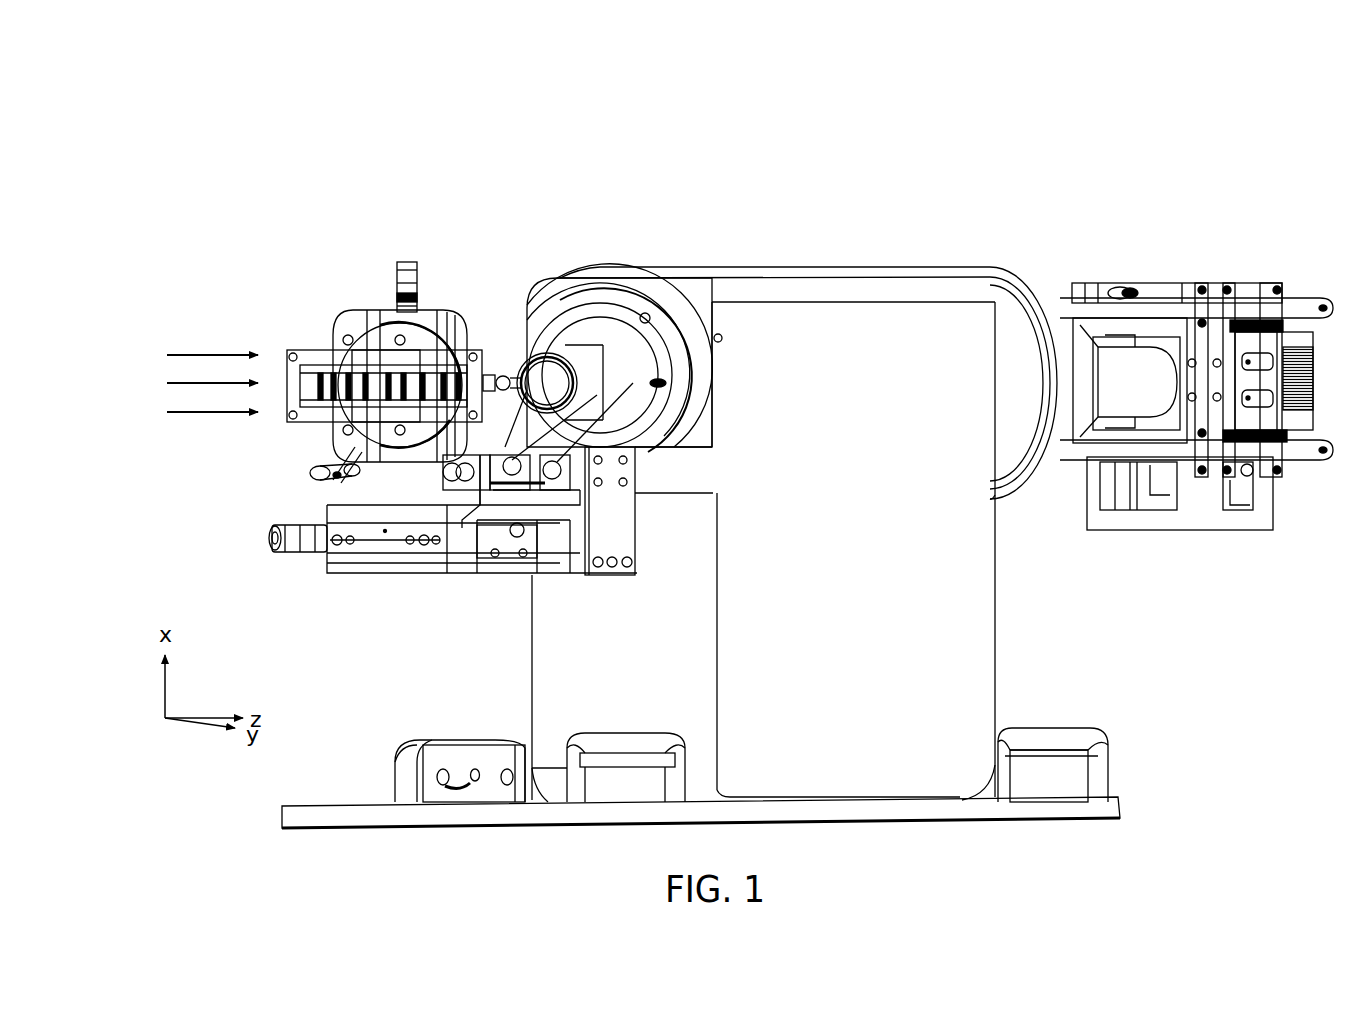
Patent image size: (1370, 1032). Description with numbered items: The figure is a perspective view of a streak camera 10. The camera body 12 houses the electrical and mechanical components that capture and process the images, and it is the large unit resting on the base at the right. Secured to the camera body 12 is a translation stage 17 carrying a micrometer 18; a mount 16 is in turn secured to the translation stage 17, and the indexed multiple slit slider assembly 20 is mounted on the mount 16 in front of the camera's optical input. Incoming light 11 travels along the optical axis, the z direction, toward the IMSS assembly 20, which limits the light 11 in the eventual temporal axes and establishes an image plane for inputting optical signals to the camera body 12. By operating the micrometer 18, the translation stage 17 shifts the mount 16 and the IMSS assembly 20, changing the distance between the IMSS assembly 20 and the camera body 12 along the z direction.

The streak camera 10 is at (172, 106).
The light 11 is at (181, 382).
The camera body 12 is at (862, 266).
The mount 16 is at (335, 493).
The translation stage 17 is at (326, 553).
The micrometer 18 is at (267, 540).
The indexed multiple slit slider (IMSS) assembly 20 is at (348, 307).